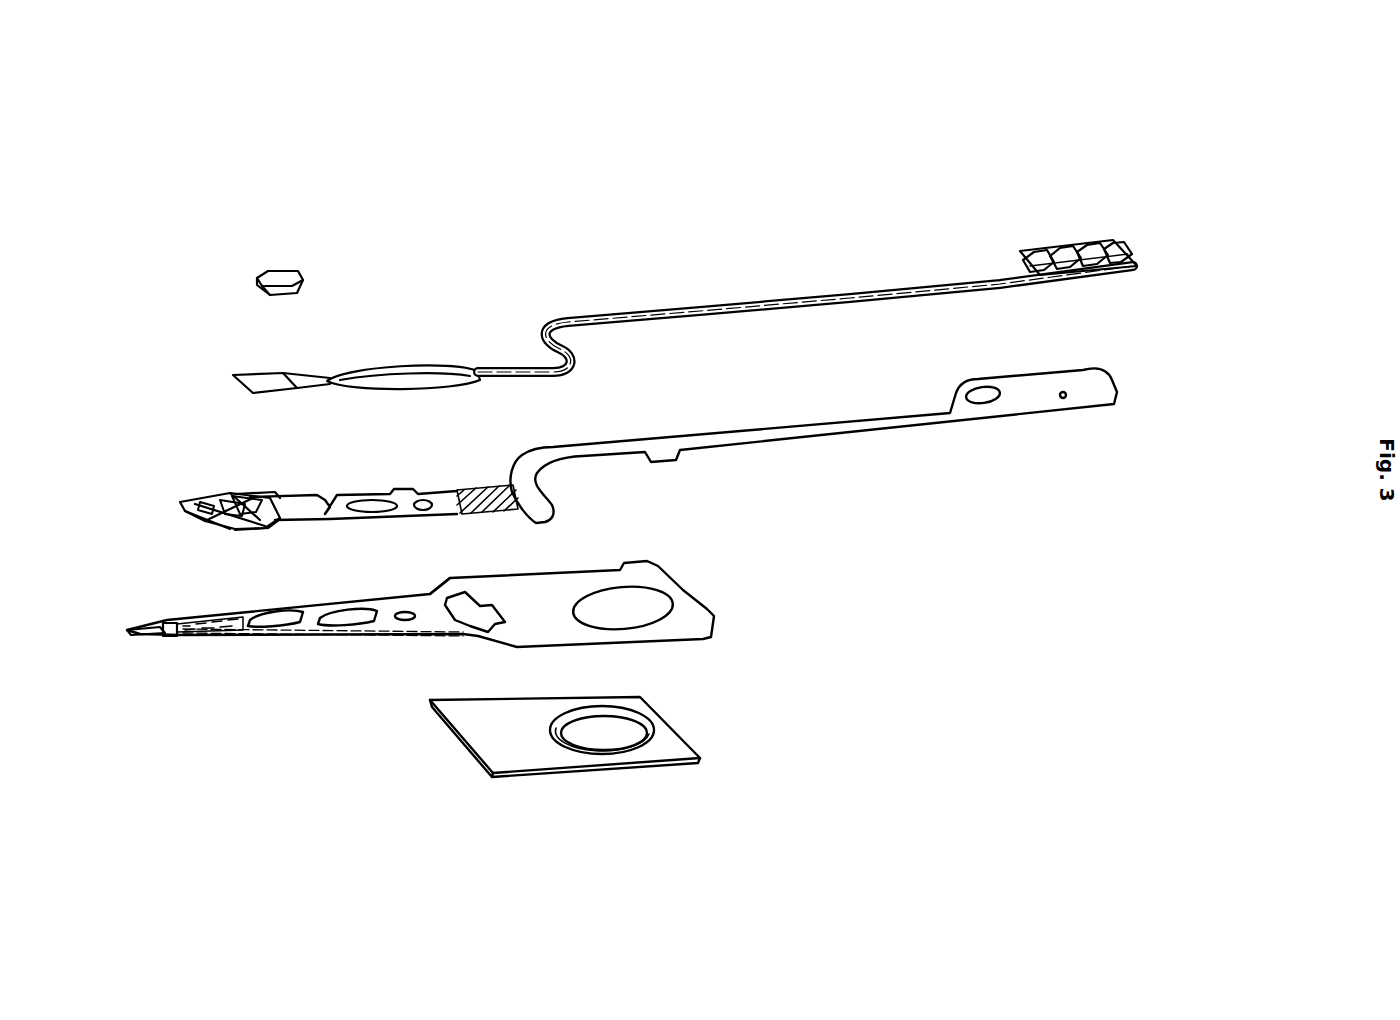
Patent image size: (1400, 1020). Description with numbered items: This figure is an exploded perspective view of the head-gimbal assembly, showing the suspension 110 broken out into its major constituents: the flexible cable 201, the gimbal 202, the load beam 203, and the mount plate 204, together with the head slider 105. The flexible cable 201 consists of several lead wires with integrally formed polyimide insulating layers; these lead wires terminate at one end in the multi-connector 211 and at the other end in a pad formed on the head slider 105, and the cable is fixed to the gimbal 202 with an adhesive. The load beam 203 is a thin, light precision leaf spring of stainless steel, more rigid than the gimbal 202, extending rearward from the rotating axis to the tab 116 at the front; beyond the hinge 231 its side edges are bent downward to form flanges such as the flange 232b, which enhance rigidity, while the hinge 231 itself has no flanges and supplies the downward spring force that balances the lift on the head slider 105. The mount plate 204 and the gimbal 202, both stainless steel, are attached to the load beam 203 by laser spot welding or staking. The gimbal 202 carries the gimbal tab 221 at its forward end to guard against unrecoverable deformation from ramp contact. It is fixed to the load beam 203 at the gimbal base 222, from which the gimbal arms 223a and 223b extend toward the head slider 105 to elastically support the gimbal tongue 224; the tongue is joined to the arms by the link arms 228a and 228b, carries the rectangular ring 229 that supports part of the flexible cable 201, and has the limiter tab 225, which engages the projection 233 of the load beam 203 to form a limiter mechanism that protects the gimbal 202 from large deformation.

The suspension 110 is at (140, 398).
The head slider 105 is at (284, 272).
The flexible cable 201 is at (846, 300).
The multi-connector 211 is at (1100, 230).
The gimbal 202 is at (556, 448).
The gimbal base 222 is at (398, 487).
The gimbal arm 223a is at (305, 494).
The gimbal arm 223b is at (325, 523).
The gimbal tab 221 is at (206, 510).
The gimbal tongue 224 is at (240, 494).
The limiter tab 225 is at (230, 496).
The rectangular ring 229 is at (210, 497).
The link arm 228a is at (250, 497).
The link arm 228b is at (258, 524).
The load beam 203 is at (566, 576).
The hinge 231 is at (438, 565).
The flange 232b is at (256, 641).
The projection 233 is at (208, 622).
The tab 116 is at (138, 638).
The mount plate 204 is at (680, 730).